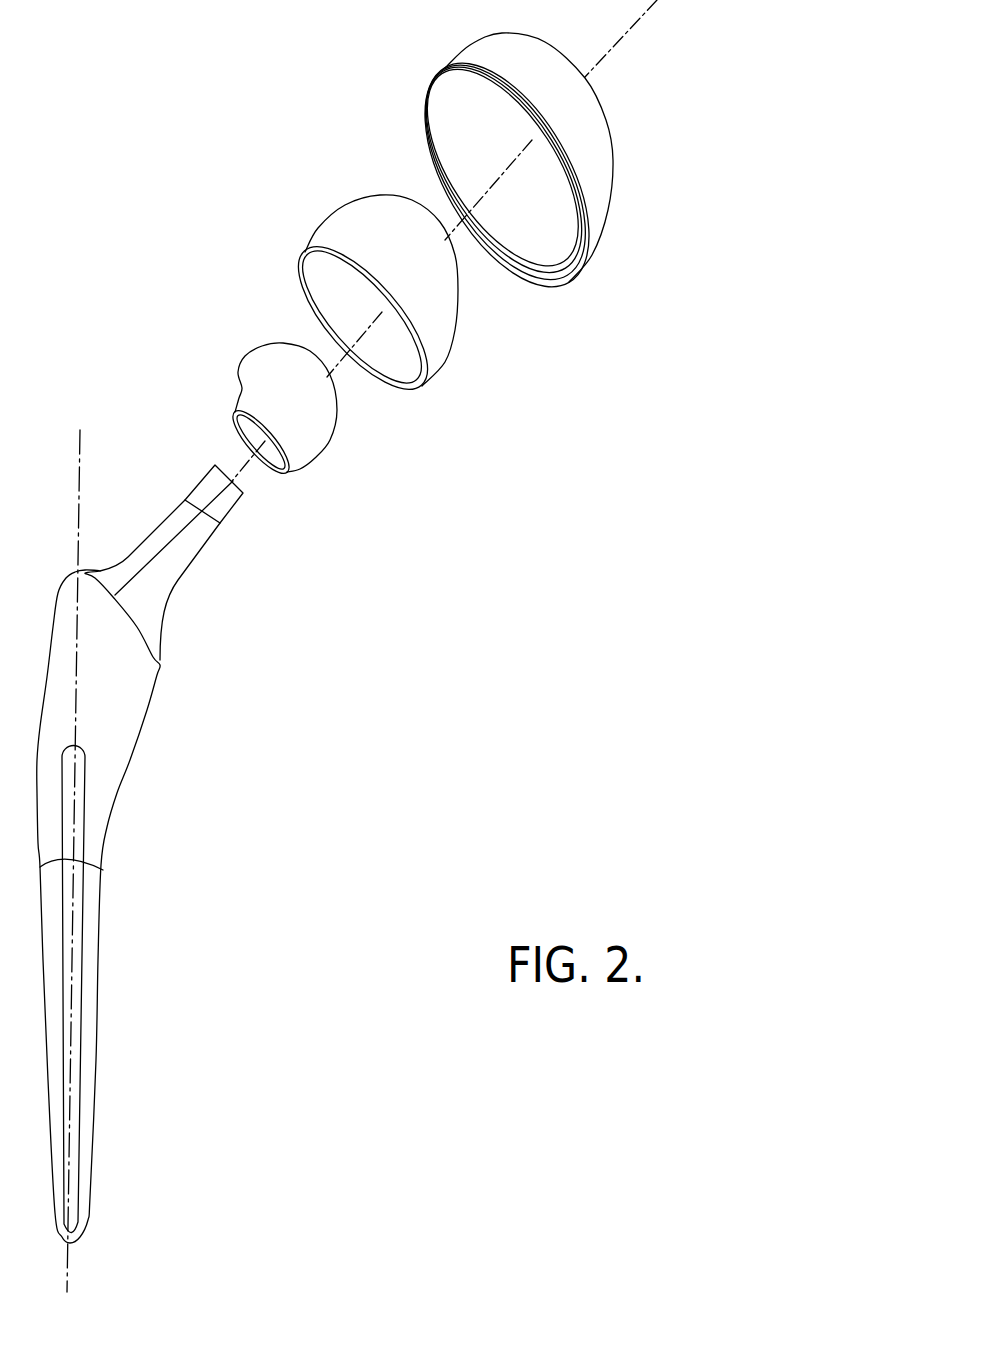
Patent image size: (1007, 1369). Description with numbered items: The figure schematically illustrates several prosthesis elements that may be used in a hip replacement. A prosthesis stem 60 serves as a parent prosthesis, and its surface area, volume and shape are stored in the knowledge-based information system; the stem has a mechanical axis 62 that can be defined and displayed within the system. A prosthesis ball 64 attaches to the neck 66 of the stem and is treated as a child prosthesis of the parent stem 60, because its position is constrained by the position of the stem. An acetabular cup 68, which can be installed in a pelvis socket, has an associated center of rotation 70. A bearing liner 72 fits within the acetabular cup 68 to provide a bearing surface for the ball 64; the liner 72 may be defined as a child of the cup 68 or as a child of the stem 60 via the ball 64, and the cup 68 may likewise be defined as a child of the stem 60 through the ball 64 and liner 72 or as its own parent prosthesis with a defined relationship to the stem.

The prosthesis stem 60 is at (90, 923).
The mechanical axis 62 is at (78, 478).
The prosthesis ball 64 is at (313, 446).
The neck 66 is at (232, 518).
The acetabular cup 68 is at (600, 192).
The center of rotation 70 is at (638, 19).
The bearing liner 72 is at (435, 343).